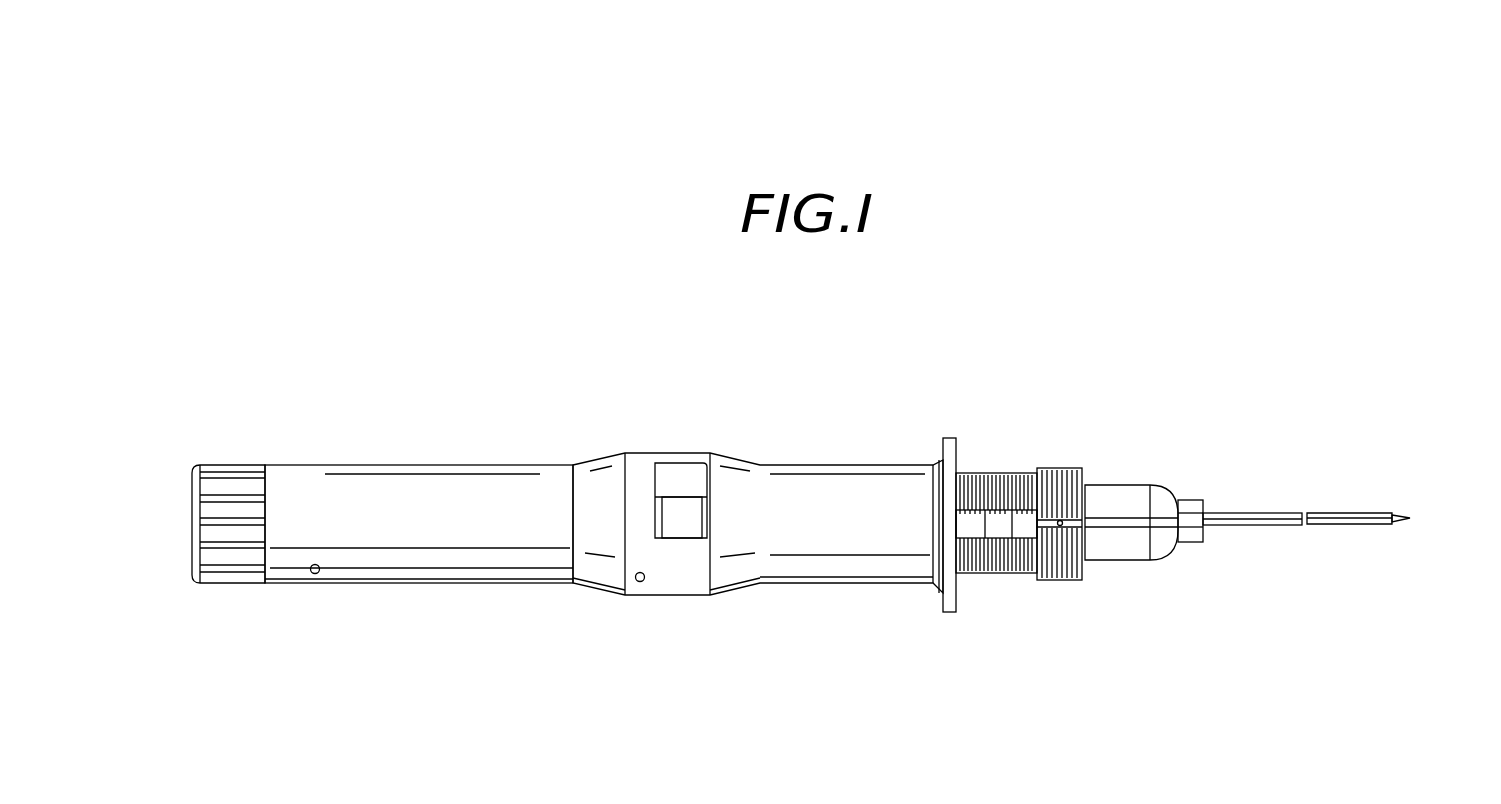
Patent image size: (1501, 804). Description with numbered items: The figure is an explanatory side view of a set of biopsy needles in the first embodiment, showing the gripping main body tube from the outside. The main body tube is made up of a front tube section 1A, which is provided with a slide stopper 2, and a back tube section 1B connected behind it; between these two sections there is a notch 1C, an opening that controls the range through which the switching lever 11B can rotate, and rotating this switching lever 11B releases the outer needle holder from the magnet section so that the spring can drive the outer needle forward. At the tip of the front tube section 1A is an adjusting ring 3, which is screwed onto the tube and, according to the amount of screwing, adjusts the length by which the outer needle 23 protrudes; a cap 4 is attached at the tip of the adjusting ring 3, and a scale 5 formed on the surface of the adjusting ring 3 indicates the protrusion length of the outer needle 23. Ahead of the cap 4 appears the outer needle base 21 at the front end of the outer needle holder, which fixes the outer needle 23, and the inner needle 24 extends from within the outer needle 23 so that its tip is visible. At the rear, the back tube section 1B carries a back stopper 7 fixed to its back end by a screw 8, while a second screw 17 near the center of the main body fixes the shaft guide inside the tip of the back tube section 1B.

The back stopper 7 is at (232, 565).
The screw 8 is at (315, 574).
The back tube section 1B is at (400, 487).
The switching lever 11B is at (675, 475).
The screw 17 is at (640, 584).
The notch 1C is at (683, 530).
The front tube section 1A is at (892, 555).
The slide stopper 2 is at (947, 443).
The scale 5 is at (1000, 480).
The adjusting ring 3 is at (1005, 560).
The cap 4 is at (1068, 565).
The outer needle holder 21 is at (1155, 552).
The outer needle 23 is at (1340, 527).
The inner needle 24 is at (1408, 525).